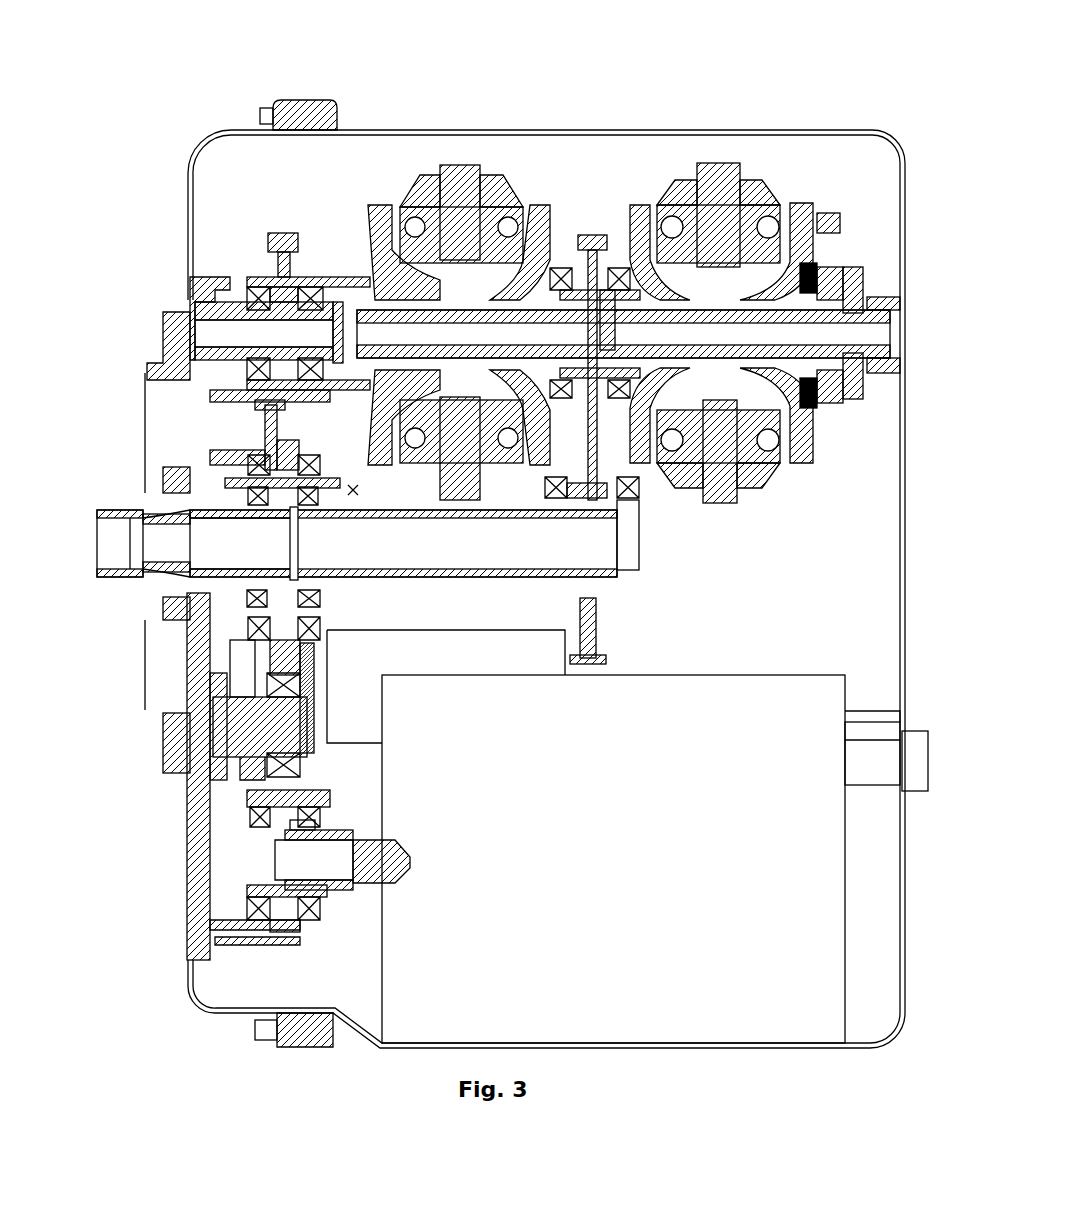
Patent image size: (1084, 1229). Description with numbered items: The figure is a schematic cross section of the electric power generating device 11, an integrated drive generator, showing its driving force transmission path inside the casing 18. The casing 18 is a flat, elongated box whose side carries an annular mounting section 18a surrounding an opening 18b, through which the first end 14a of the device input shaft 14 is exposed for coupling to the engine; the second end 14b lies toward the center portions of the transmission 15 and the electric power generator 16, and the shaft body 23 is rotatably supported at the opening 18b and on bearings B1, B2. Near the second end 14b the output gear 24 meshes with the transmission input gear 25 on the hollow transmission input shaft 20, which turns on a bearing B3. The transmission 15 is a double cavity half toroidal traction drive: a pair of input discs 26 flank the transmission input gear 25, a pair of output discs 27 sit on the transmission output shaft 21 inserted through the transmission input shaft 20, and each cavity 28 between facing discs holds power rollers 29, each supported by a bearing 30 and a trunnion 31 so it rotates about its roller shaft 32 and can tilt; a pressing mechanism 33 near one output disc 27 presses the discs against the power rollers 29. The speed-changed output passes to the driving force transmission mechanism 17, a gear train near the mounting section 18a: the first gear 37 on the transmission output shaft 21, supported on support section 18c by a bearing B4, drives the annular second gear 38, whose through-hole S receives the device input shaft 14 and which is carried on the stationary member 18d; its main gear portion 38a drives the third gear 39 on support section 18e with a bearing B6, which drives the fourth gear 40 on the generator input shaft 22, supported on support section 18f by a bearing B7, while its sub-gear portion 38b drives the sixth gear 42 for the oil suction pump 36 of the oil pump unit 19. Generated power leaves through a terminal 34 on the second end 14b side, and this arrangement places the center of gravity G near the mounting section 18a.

The electric power generating device 11 is at (688, 102).
The device input shaft 14 is at (386, 578).
The first end 14a is at (97, 522).
The second end 14b is at (615, 572).
The transmission 15 is at (782, 170).
The electric power generator 16 is at (748, 674).
The driving force transmission mechanism 17 is at (270, 182).
The casing 18 is at (183, 205).
The mounting section 18a is at (165, 362).
The opening 18b is at (172, 600).
The support section 18c is at (205, 282).
The stationary member 18d is at (190, 476).
The support section 18e is at (222, 790).
The support section 18f is at (225, 940).
The oil pump unit 19 is at (486, 626).
The transmission input shaft 20 is at (592, 236).
The transmission output shaft 21 is at (600, 306).
The generator input shaft 22 is at (355, 882).
The shaft body 23 is at (480, 578).
The output gear 24 is at (600, 660).
The transmission input gear 25 is at (610, 240).
The input discs 26 is at (582, 290).
The output discs 27 is at (385, 205).
The cavities 28 is at (437, 280).
The power rollers 29 is at (540, 205).
The bearing 30 is at (500, 205).
The trunnion 31 is at (461, 165).
The roller shaft 32 is at (443, 172).
The pressing mechanism 33 is at (832, 248).
The terminal 34 is at (920, 800).
The oil suction pump 36 is at (585, 674).
The first gear 37 is at (283, 232).
The second gear 38 is at (252, 472).
The main gear portion 38a is at (258, 452).
The sub-gear portion 38b is at (290, 458).
The third gear 39 is at (262, 680).
The fourth gear 40 is at (290, 935).
The sixth gear 42 is at (320, 745).
The bearing B1 is at (640, 592).
The bearing B2 is at (300, 588).
The bearing B3 is at (630, 522).
The bearing B4 is at (250, 285).
The bearing B6 is at (303, 768).
The bearing B7 is at (302, 920).
The center of gravity G is at (365, 495).
The through-hole S is at (230, 496).